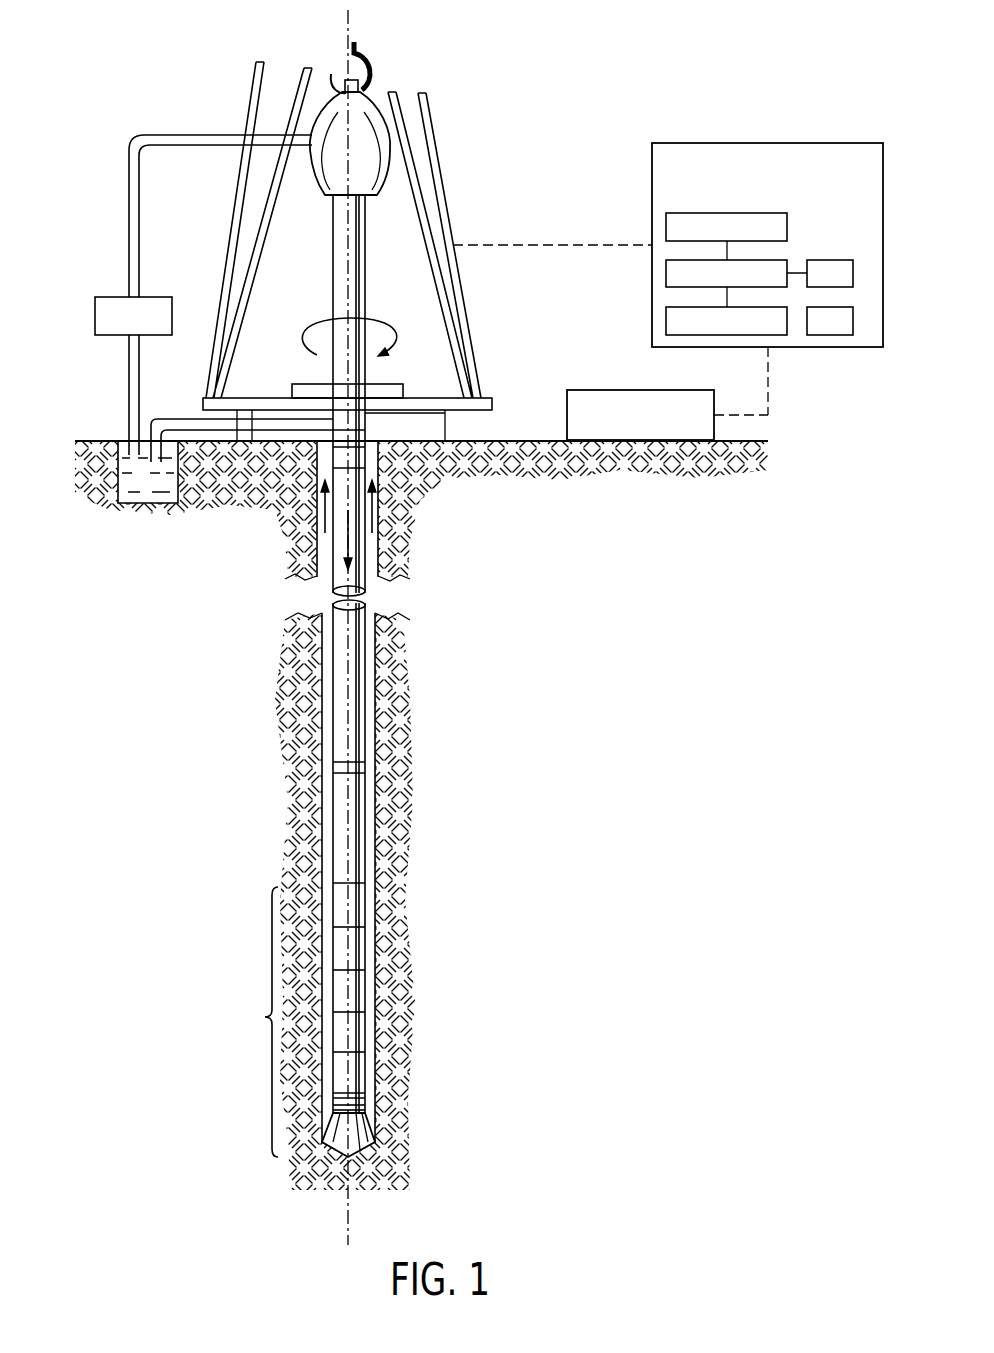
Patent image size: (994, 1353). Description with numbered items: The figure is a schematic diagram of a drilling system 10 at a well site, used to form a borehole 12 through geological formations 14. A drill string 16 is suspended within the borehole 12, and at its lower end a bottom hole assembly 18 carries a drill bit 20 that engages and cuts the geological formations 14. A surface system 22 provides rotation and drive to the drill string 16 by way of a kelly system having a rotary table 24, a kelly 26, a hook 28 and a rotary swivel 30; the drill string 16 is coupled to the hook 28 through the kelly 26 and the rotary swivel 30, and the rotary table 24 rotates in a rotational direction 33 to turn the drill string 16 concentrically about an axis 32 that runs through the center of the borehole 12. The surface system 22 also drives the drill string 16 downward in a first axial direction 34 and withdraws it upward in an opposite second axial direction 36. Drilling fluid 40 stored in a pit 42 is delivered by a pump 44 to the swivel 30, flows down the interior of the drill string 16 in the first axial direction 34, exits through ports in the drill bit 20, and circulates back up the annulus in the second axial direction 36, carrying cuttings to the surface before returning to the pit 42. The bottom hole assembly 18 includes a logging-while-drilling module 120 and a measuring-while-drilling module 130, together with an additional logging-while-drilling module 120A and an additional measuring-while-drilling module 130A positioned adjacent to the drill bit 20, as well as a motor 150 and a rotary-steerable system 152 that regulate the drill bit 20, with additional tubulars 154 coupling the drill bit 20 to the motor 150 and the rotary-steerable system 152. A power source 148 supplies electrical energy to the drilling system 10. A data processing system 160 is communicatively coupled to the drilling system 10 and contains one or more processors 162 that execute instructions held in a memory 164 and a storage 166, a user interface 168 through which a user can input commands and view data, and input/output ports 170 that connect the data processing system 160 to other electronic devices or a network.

The drilling system 10 is at (474, 77).
The borehole 12 is at (372, 456).
The geological formations 14 is at (505, 446).
The drill string 16 is at (347, 430).
The bottom hole assembly 18 is at (255, 1022).
The drill bit 20 is at (357, 1143).
The surface system 22 is at (487, 316).
The rotary table 24 is at (387, 383).
The kelly 26 is at (333, 367).
The hook 28 is at (364, 52).
The rotary swivel 30 is at (316, 185).
The axis 32 is at (348, 675).
The rotational direction 33 is at (382, 350).
The first axial direction 34 is at (348, 535).
The second axial direction 36 is at (327, 514).
The drilling fluid 40 is at (145, 505).
The pit 42 is at (115, 434).
The pump 44 is at (95, 315).
The logging-while-drilling module 120 is at (355, 945).
The measuring-while-drilling module 130 is at (355, 988).
The additional logging-while-drilling module 120A is at (355, 1028).
The additional measuring-while-drilling module 130A is at (353, 1073).
The power source 148 is at (640, 390).
The motor 150 is at (357, 1098).
The rotary-steerable system 152 is at (360, 1102).
The additional tubulars 154 is at (353, 1113).
The data processing system 160 is at (736, 239).
The processors 162 is at (666, 273).
The memory 164 is at (666, 226).
The storage 166 is at (666, 320).
The user interface 168 is at (842, 260).
The input/output ports 170 is at (853, 325).